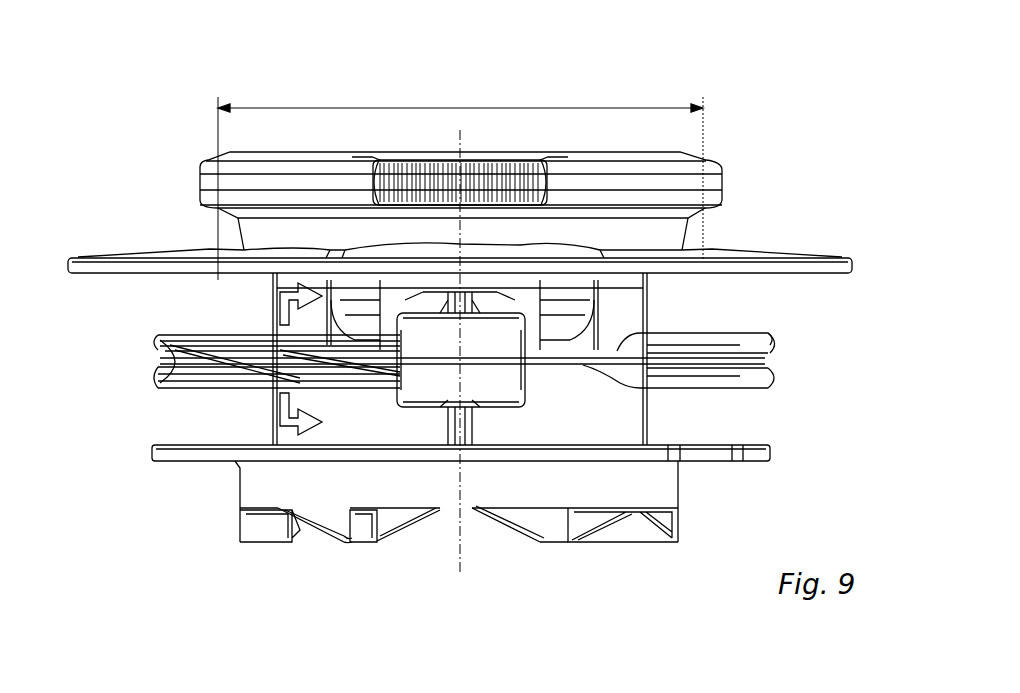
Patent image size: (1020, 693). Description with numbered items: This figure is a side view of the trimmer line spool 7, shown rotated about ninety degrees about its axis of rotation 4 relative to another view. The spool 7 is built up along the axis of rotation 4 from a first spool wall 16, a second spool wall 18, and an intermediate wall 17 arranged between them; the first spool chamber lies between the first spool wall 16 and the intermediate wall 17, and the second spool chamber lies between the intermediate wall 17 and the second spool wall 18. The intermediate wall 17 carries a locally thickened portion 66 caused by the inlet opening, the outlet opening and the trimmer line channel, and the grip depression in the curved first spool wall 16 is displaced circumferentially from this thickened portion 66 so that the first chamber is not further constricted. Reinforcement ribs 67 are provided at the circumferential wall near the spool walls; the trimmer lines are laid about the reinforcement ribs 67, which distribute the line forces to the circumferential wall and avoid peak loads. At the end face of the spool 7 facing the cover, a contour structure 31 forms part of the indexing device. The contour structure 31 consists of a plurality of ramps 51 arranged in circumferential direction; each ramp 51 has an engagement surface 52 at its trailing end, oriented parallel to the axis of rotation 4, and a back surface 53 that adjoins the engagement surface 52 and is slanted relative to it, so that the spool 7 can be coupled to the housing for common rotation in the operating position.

The trimmer line spool 7 is at (128, 171).
The first spool wall 16 is at (838, 256).
The intermediate wall 17 is at (757, 334).
The thickened portion 66 is at (723, 387).
The second spool wall 18 is at (713, 463).
The reinforcement rib 67 is at (475, 298).
The axis of rotation 4 is at (463, 552).
The contour structure 31 is at (268, 543).
The back surface 53 is at (323, 538).
The ramp 51 is at (337, 543).
The engagement surface 52 is at (356, 545).